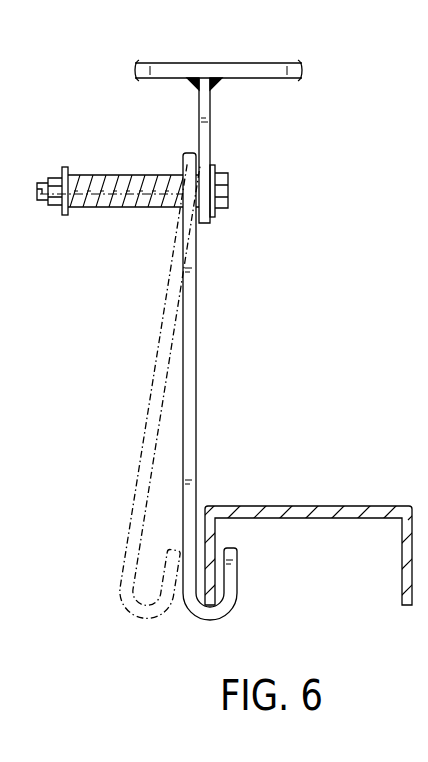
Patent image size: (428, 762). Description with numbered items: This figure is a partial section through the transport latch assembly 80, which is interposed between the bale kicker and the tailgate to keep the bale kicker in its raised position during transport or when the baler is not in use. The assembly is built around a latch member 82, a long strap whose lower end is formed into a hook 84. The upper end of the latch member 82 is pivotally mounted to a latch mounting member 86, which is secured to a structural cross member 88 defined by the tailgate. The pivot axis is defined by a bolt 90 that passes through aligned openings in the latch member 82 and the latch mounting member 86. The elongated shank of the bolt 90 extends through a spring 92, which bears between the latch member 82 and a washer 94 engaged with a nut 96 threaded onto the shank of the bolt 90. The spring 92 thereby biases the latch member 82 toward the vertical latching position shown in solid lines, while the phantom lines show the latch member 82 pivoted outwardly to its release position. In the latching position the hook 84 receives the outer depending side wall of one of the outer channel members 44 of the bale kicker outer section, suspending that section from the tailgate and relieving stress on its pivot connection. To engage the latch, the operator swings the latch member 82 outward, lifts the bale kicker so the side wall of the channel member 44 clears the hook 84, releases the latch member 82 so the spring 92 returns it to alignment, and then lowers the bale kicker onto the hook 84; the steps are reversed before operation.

The outer channel member 44 is at (303, 504).
The transport latch assembly 80 is at (126, 323).
The latch member 82 is at (198, 350).
The hook 84 is at (227, 607).
The latch mounting member 86 is at (210, 138).
The structural cross member 88 is at (217, 62).
The bolt 90 is at (229, 208).
The spring 92 is at (143, 175).
The washer 94 is at (65, 216).
The nut 96 is at (56, 176).